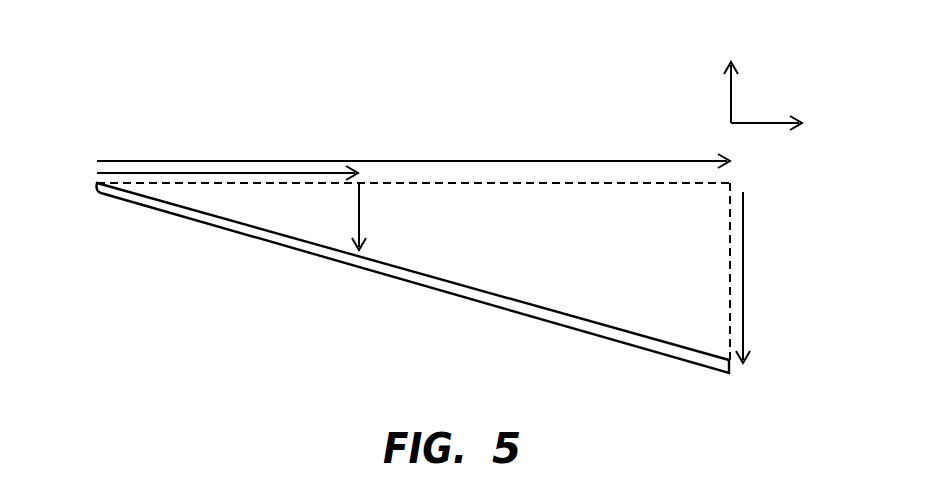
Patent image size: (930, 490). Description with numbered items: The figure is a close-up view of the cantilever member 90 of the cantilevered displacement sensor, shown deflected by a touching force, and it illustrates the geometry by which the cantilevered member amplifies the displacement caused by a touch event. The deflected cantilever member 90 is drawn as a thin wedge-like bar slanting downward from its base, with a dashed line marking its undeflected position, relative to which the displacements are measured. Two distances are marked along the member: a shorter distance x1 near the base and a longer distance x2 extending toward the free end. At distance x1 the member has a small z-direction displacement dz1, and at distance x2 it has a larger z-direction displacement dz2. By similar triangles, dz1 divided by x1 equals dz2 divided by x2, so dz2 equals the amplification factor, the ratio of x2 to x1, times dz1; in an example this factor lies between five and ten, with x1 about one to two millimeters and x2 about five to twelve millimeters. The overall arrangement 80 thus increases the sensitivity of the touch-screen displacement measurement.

The wedge ramp geometry diagram 80 is at (447, 196).
The cantilever member 90 is at (432, 278).
The distance x1 is at (227, 144).
The distance x2 is at (413, 142).
The z-direction displacement dz1 is at (390, 216).
The z-direction displacement dz2 is at (773, 277).